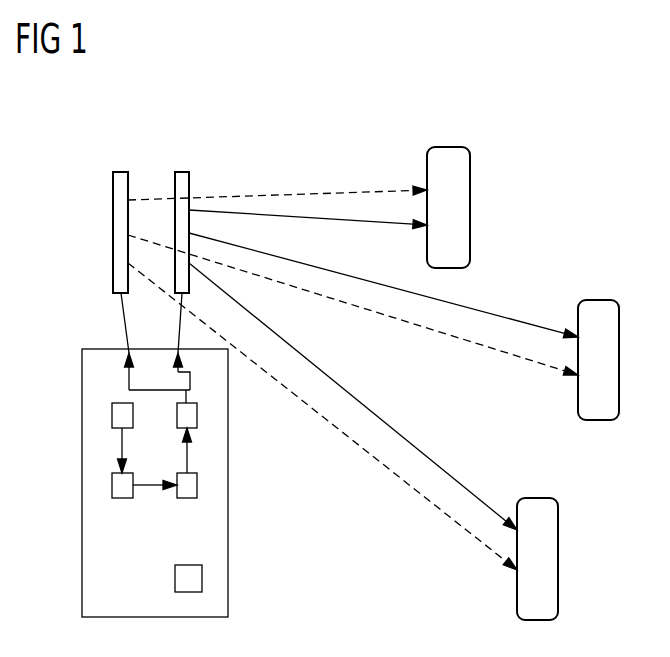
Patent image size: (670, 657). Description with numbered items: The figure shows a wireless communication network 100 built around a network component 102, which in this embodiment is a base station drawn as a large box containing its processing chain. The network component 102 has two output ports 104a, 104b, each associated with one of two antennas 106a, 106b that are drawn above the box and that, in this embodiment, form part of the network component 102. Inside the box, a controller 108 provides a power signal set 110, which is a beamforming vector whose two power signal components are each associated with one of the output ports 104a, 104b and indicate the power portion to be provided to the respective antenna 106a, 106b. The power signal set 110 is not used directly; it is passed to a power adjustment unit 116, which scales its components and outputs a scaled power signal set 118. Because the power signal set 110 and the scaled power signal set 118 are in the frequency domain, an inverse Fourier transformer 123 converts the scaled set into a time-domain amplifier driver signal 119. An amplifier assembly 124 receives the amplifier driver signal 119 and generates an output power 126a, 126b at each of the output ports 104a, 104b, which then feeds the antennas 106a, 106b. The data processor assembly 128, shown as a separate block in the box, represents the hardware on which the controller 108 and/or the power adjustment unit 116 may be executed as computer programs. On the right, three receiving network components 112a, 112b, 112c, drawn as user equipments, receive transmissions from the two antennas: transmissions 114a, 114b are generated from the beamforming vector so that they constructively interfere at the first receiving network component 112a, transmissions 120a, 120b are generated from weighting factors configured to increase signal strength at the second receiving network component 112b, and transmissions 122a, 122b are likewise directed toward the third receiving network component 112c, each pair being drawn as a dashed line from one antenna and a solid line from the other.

The wireless communication network 100 is at (565, 100).
The network component 102 is at (82, 517).
The output port 104a is at (128, 348).
The output port 104b is at (178, 348).
The antenna 106a is at (120, 172).
The antenna 106b is at (183, 172).
The controller 108 is at (112, 415).
The power signal set 110 is at (122, 443).
The first receiving network component 112a is at (447, 146).
The second receiving network component 112b is at (598, 300).
The third receiving network component 112c is at (537, 498).
The transmission 114a is at (315, 190).
The transmission 114b is at (392, 226).
The power adjustment unit 116 is at (122, 498).
The scaled power signal set 118 is at (150, 482).
The amplifier driver signal 119 is at (187, 463).
The transmission 120a is at (472, 343).
The transmission 120b is at (494, 315).
The transmission 122a is at (428, 503).
The transmission 122b is at (450, 477).
The inverse Fourier transformer 123 is at (185, 498).
The amplifier assembly 124 is at (197, 415).
The output power 126a is at (128, 385).
The output power 126b is at (195, 390).
The data processor assembly 128 is at (175, 573).